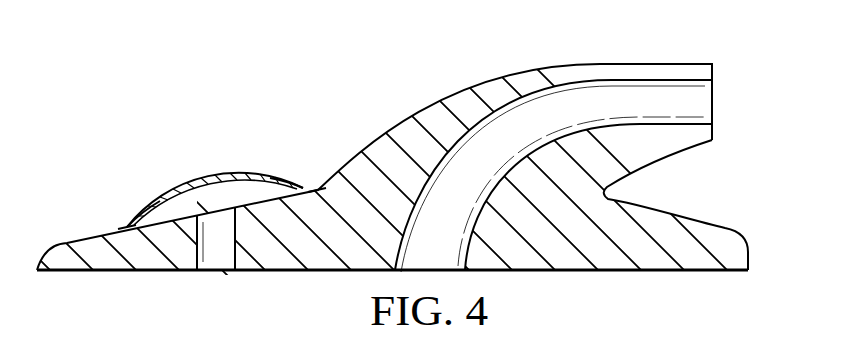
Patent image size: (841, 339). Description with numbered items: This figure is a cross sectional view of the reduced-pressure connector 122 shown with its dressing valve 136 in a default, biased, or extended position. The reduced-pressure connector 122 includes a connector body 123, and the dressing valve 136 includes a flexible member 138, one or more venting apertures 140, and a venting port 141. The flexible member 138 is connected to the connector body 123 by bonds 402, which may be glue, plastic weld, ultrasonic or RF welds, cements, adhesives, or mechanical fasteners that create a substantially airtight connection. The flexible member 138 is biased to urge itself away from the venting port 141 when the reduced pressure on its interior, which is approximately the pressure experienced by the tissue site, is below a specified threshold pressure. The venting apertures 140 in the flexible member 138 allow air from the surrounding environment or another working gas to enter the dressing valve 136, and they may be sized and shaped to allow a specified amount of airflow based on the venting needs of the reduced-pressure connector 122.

The reduced-pressure connector 122 is at (642, 60).
The connector body 123 is at (486, 80).
The dressing valve 136 is at (178, 165).
The flexible member 138 is at (221, 174).
The venting apertures 140 is at (287, 181).
The bonds 402 is at (318, 188).
The venting port 141 is at (232, 257).